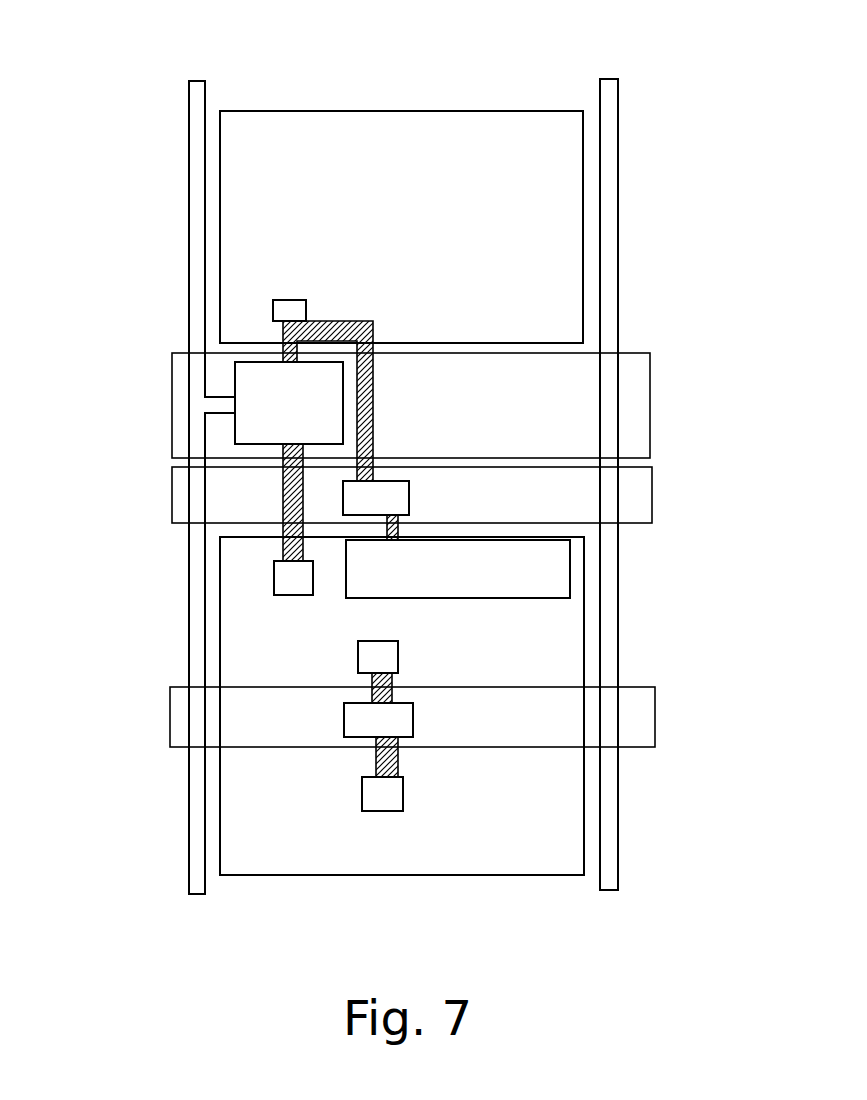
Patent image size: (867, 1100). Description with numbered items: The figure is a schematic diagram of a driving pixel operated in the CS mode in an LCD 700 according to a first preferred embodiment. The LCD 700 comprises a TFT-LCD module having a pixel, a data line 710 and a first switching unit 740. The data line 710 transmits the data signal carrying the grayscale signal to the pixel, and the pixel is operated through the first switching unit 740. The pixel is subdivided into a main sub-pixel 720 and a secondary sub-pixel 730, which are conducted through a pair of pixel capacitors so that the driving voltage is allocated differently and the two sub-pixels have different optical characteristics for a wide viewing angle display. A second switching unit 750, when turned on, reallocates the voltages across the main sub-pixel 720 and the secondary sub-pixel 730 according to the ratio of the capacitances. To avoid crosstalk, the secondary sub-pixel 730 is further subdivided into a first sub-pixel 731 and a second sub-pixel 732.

The LCD 700 is at (150, 107).
The data line 710 is at (193, 242).
The main sub-pixel 720 is at (553, 219).
The secondary sub-pixel 730 is at (578, 592).
The first sub-pixel 731 is at (535, 671).
The second sub-pixel 732 is at (547, 832).
The first switching unit 740 is at (267, 405).
The second switching unit 750 is at (409, 493).